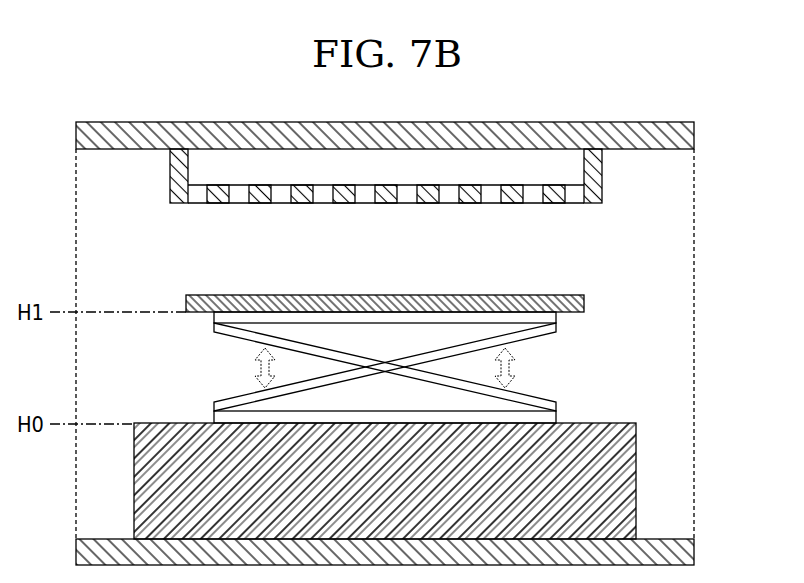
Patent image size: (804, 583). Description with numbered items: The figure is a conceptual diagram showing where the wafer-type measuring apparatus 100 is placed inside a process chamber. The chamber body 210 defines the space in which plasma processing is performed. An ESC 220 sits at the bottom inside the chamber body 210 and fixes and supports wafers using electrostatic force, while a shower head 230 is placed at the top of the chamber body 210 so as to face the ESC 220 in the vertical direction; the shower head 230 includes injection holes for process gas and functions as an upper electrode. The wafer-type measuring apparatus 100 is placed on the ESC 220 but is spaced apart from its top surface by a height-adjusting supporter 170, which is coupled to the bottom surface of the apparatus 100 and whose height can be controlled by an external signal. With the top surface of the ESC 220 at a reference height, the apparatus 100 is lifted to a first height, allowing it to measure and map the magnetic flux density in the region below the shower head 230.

The wafer-type measuring apparatus 100 is at (585, 304).
The height-adjusting supporter 170 is at (516, 330).
The chamber body 210 is at (682, 547).
The ESC 220 is at (620, 474).
The shower head 230 is at (603, 197).